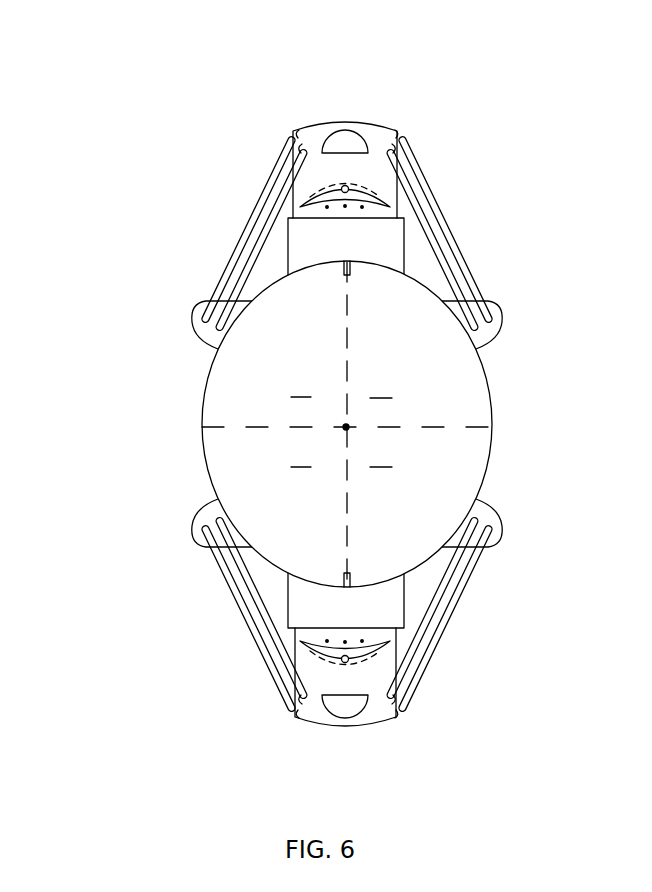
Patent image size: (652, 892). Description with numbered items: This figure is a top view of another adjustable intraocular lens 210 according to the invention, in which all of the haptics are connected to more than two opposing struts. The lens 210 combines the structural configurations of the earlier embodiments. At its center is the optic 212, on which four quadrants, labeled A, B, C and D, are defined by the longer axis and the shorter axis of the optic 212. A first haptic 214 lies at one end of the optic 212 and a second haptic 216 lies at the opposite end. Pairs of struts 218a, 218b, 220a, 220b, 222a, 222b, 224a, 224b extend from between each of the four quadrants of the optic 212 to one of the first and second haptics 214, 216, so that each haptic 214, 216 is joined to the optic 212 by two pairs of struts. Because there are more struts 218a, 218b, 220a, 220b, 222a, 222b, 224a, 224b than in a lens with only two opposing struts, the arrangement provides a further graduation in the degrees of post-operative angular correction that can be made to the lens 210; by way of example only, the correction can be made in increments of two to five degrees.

The lens 210 is at (361, 389).
The optic 212 is at (478, 398).
The first haptic 214 is at (369, 129).
The second haptic 216 is at (371, 718).
The strut 218a is at (257, 214).
The strut 218b is at (258, 248).
The strut 220a is at (428, 199).
The strut 220b is at (431, 230).
The strut 222a is at (466, 579).
The strut 222b is at (438, 603).
The strut 224a is at (250, 573).
The strut 224b is at (241, 603).